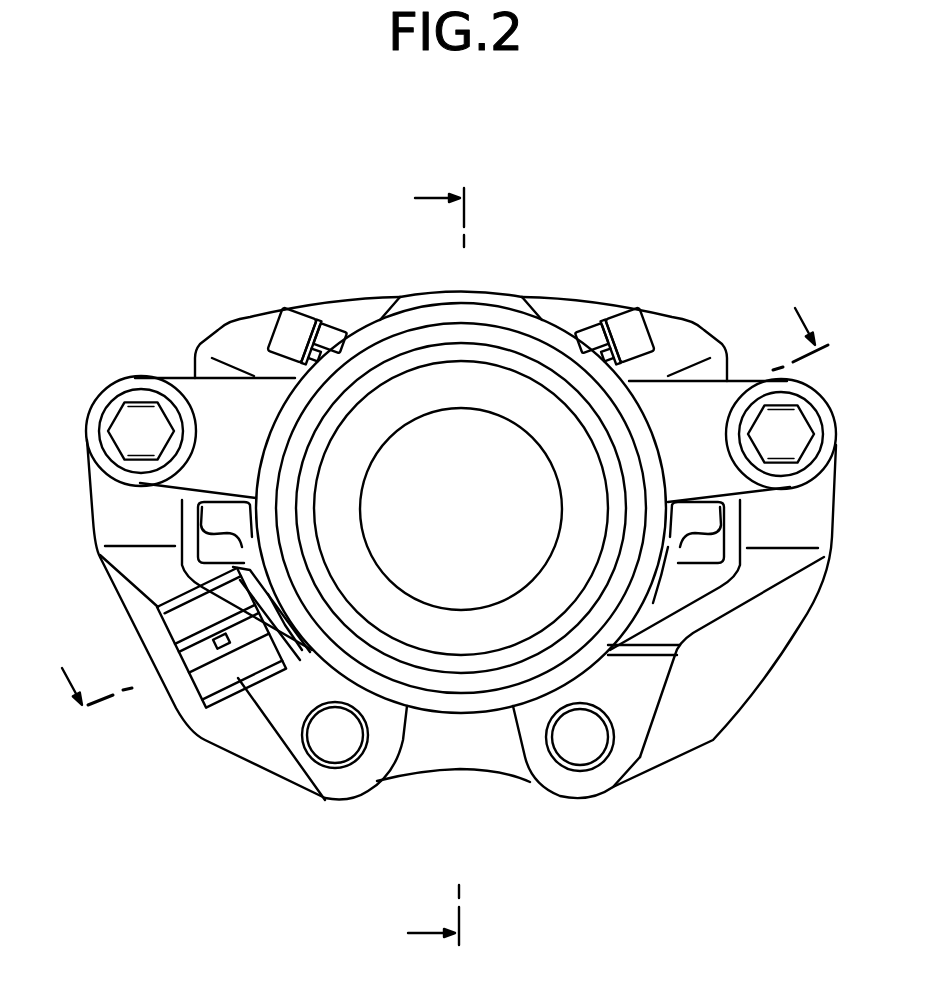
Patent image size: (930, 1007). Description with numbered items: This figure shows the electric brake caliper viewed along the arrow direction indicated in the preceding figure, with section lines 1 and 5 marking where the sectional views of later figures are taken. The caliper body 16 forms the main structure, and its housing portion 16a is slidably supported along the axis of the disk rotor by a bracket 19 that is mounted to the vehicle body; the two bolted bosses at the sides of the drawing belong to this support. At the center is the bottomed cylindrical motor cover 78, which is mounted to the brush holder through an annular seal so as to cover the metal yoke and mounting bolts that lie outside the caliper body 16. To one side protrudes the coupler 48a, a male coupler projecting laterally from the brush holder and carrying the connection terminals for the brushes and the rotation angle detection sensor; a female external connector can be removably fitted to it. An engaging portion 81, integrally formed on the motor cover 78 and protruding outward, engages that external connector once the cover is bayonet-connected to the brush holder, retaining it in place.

The section line of FIG. 1 is at (436, 567).
The section line of FIG. 5 is at (443, 499).
The caliper body 16 is at (569, 294).
The housing portion 16a is at (368, 320).
The bracket 19 is at (620, 752).
The coupler 48a is at (238, 673).
The motor cover 78 is at (468, 637).
The engaging portion 81 is at (257, 622).